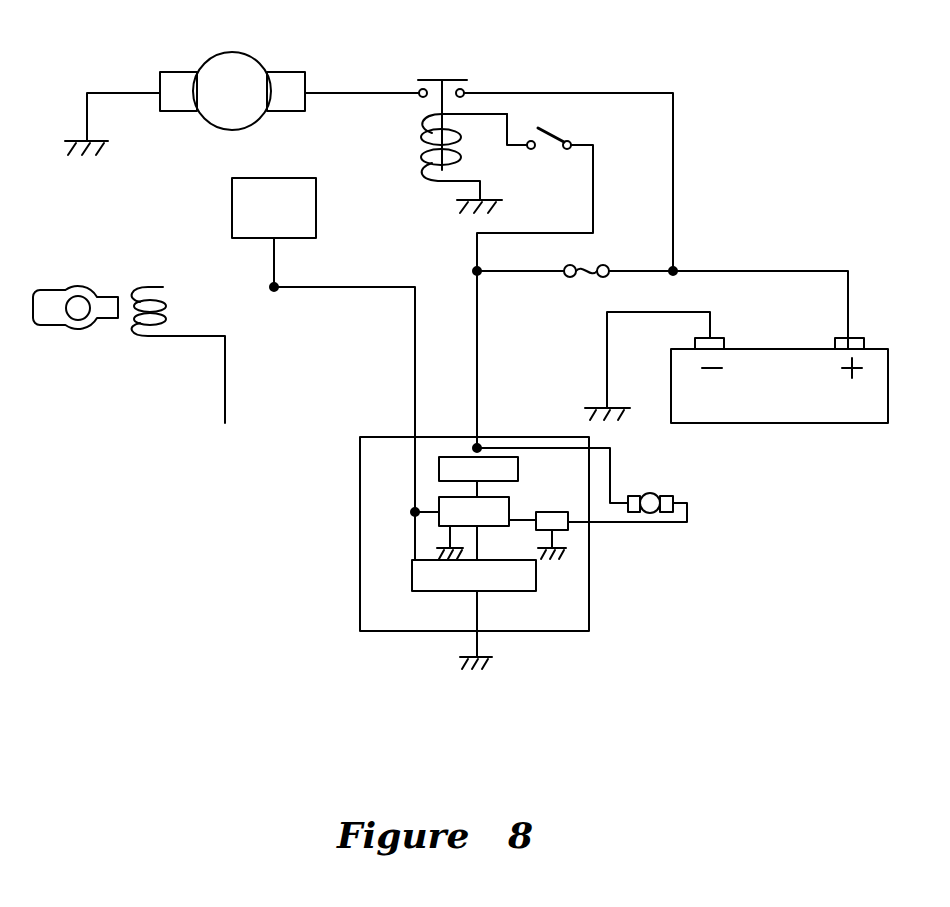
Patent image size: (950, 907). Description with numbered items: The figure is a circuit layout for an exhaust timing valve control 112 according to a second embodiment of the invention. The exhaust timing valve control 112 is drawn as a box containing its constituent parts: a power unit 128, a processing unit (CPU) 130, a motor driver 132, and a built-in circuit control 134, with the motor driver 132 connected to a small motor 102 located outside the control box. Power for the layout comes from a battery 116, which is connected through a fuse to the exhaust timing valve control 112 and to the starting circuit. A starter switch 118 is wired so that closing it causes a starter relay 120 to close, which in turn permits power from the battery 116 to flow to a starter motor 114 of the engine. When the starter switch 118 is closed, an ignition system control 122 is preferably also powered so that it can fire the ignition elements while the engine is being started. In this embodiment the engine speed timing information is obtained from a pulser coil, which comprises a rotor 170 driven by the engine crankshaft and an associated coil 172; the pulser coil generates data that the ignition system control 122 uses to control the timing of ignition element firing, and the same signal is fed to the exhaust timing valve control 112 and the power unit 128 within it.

The motor 102 is at (660, 492).
The exhaust timing valve control 112 is at (360, 537).
The starter motor 114 is at (262, 62).
The battery 116 is at (833, 423).
The starter switch 118 is at (557, 130).
The starter relay 120 is at (452, 78).
The ignition system control 122 is at (221, 208).
The power unit 128 is at (448, 457).
The processing unit (CPU) 130 is at (509, 507).
The motor driver 132 is at (568, 527).
The built-in circuit control 134 is at (514, 602).
The rotor 170 is at (77, 333).
The coil 172 is at (133, 337).